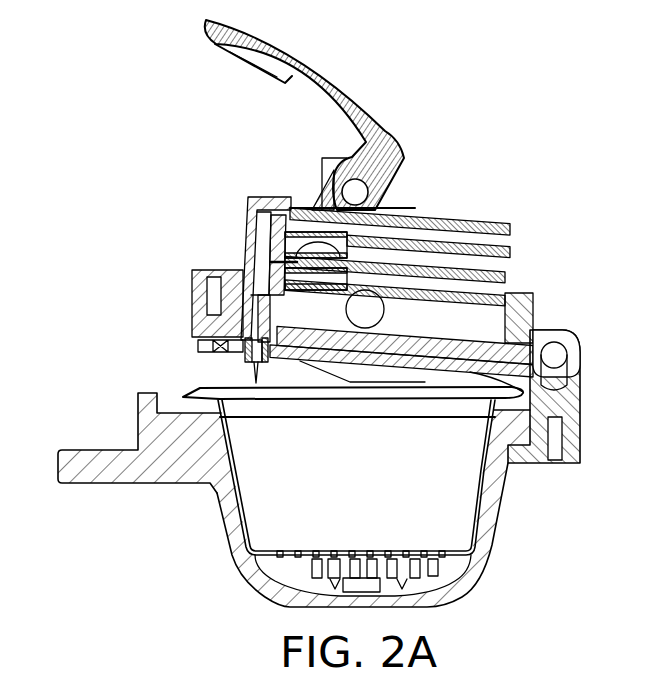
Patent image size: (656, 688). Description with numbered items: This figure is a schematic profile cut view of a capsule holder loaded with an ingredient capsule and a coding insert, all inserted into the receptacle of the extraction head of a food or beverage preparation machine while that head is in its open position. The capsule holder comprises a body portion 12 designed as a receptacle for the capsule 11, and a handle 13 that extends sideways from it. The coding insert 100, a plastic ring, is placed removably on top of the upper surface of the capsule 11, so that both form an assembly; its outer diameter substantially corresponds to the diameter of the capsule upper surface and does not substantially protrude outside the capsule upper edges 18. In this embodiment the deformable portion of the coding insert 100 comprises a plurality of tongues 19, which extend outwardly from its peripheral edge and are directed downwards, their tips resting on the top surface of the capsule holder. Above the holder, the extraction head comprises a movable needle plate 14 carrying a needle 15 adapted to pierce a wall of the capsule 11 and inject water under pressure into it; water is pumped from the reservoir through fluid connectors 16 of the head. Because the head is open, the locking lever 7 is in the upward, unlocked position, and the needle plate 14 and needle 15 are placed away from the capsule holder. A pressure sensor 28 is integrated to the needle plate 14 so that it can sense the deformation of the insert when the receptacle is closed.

The locking lever 7 is at (295, 66).
The fluid connectors 16 is at (245, 234).
The pressure sensor 28 is at (197, 344).
The needle 15 is at (252, 368).
The tongues 19 is at (186, 396).
The coding insert 100 is at (252, 390).
The handle 13 is at (90, 481).
The capsule 11 is at (257, 508).
The body portion 12 is at (481, 552).
The needle plate 14 is at (537, 392).
The capsule upper edges 18 is at (535, 440).